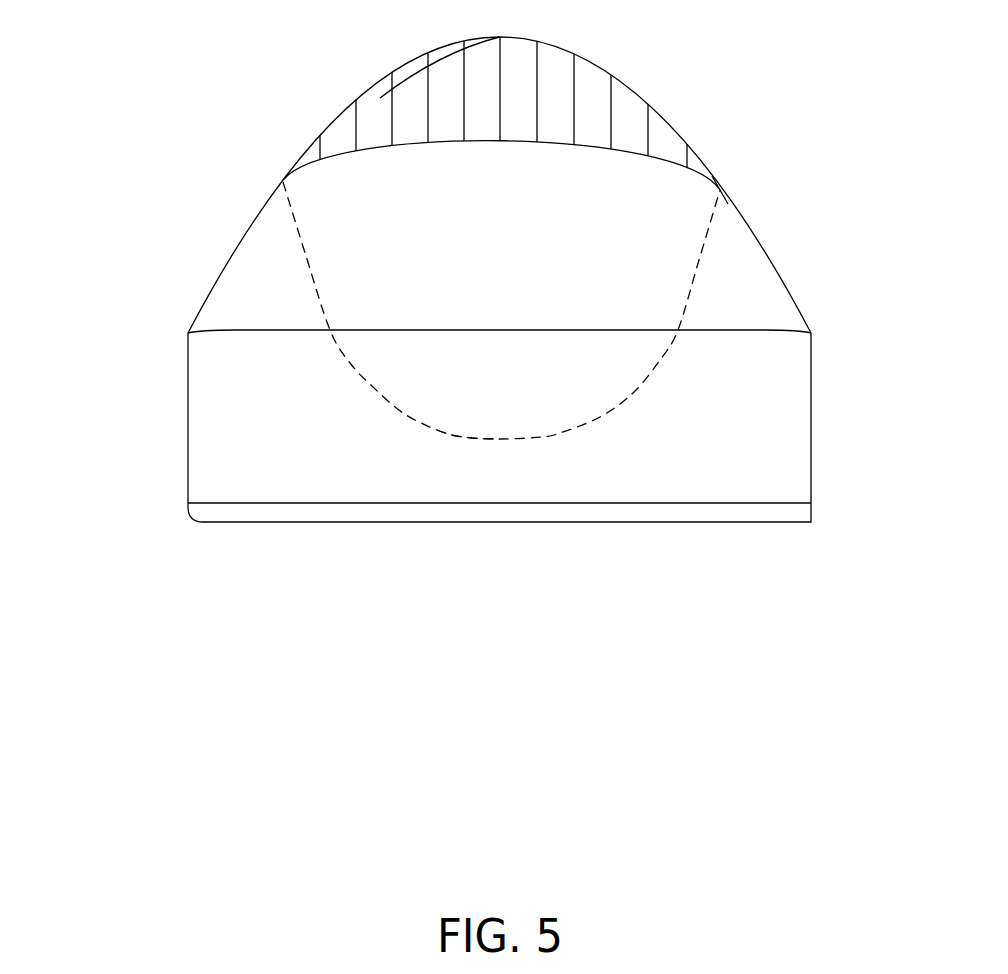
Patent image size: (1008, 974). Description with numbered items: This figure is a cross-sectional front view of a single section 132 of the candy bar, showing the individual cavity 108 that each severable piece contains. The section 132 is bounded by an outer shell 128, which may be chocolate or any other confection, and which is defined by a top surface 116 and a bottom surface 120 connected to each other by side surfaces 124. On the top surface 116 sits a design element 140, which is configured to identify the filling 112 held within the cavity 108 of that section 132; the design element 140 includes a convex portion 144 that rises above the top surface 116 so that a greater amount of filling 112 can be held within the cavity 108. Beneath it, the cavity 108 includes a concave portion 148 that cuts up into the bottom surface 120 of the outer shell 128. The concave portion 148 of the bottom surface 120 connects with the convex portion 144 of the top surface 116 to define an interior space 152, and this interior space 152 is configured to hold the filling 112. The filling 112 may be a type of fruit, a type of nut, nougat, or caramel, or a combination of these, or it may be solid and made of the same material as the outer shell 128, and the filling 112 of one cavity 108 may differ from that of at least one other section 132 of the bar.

The cavity 108 is at (720, 190).
The filling 112 is at (543, 405).
The top surface 116 is at (752, 272).
The bottom surface 120 is at (722, 512).
The side surfaces 124 is at (780, 425).
The outer shell 128 is at (188, 333).
The section 132 is at (461, 298).
The design element 140 is at (556, 60).
The convex portion 144 is at (410, 61).
The concave portion 148 is at (463, 438).
The interior space 152 is at (347, 258).